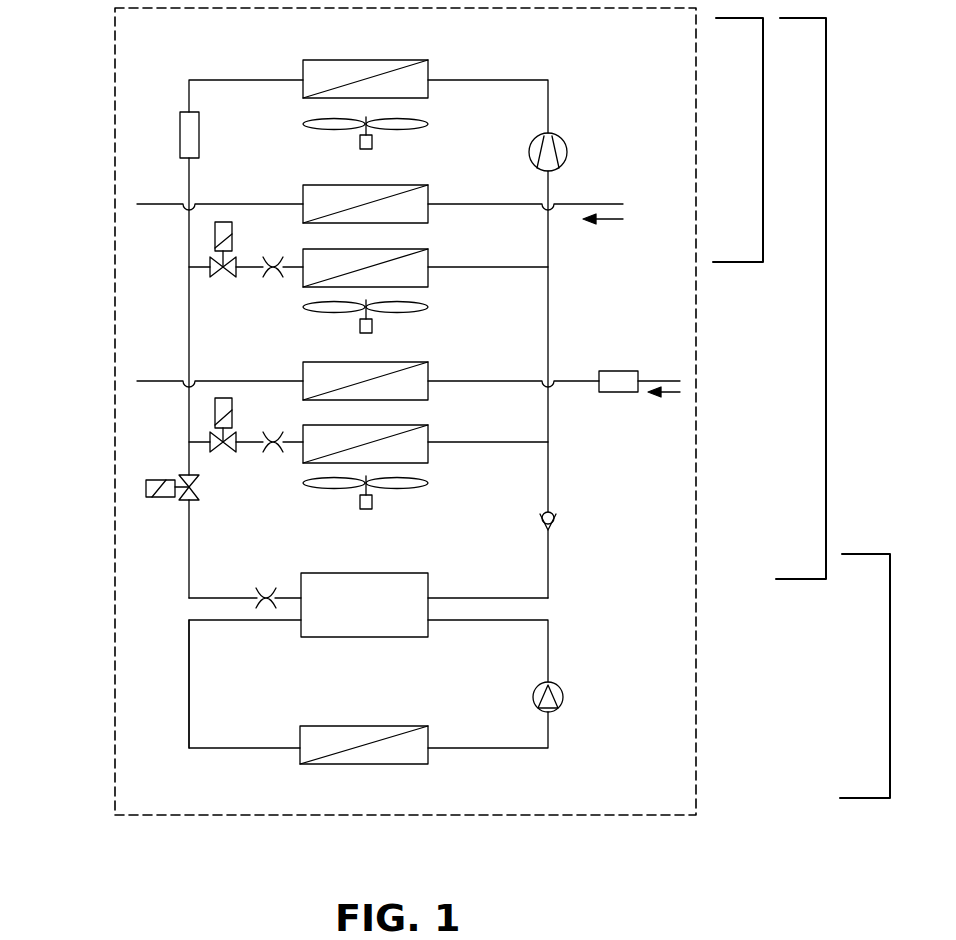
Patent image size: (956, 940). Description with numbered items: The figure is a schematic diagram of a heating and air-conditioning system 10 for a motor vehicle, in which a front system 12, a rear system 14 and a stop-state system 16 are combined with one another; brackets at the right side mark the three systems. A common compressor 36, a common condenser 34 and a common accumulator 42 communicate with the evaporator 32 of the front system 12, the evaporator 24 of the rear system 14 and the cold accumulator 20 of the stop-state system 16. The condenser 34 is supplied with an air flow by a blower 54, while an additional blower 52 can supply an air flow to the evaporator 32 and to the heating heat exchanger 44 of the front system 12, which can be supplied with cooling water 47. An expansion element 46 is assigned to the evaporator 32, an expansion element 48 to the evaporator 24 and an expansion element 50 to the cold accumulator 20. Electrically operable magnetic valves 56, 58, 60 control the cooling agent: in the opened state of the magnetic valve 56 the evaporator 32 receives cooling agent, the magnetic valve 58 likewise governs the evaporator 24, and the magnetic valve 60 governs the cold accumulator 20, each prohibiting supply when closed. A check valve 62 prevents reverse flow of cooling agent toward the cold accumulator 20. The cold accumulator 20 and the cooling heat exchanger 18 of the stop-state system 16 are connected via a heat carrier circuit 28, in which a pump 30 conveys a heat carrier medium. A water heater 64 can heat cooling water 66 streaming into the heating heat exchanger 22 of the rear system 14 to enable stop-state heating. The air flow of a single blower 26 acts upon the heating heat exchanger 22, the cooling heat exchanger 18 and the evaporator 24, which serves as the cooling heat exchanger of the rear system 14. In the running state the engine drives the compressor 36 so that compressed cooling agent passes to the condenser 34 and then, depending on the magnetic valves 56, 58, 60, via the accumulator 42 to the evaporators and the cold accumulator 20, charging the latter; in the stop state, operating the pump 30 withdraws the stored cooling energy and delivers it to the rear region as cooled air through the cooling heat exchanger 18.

The heating and air-conditioning system 10 is at (90, 50).
The front system 12 is at (763, 193).
The rear system 14 is at (826, 496).
The stop-state system 16 is at (890, 731).
The cooling heat exchanger 18 is at (392, 764).
The cold accumulator 20 is at (392, 638).
The heating heat exchanger 22 is at (312, 363).
The evaporator 24 is at (410, 426).
The blower 26 is at (373, 505).
The heat carrier circuit 28 is at (188, 700).
The pump 30 is at (563, 697).
The evaporator 32 is at (410, 249).
The condenser 34 is at (363, 60).
The compressor 36 is at (557, 138).
The accumulator 42 is at (181, 128).
The heating heat exchanger 44 is at (312, 186).
The expansion element 46 is at (273, 280).
The cooling water 47 is at (610, 222).
The expansion element 48 is at (273, 455).
The expansion element 50 is at (266, 588).
The blower 52 is at (373, 330).
The blower 54 is at (373, 143).
The magnetic valve 56 is at (221, 278).
The magnetic valve 58 is at (223, 453).
The magnetic valve 60 is at (197, 490).
The check valve 62 is at (556, 513).
The water heater 64 is at (622, 371).
The cooling water 66 is at (662, 395).